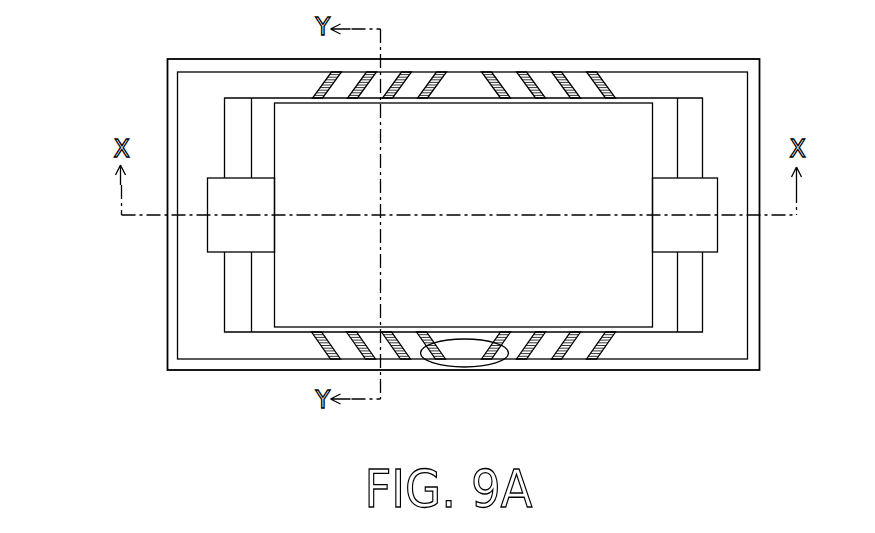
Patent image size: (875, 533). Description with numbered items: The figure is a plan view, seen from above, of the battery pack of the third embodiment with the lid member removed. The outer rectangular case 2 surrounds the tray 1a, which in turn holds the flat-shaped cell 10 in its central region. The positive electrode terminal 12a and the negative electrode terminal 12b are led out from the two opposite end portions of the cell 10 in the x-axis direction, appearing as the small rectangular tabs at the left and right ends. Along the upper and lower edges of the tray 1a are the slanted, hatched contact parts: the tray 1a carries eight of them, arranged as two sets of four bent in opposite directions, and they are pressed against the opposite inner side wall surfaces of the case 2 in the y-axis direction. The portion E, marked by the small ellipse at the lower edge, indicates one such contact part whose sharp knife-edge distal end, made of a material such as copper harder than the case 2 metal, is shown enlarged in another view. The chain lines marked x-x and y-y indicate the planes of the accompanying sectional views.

The case 2 is at (168, 278).
The tray 1a is at (225, 107).
The flat-shaped cell 10 is at (275, 143).
The positive electrode terminal 12a is at (208, 236).
The negative electrode terminal 12b is at (718, 242).
The portion E is at (514, 365).